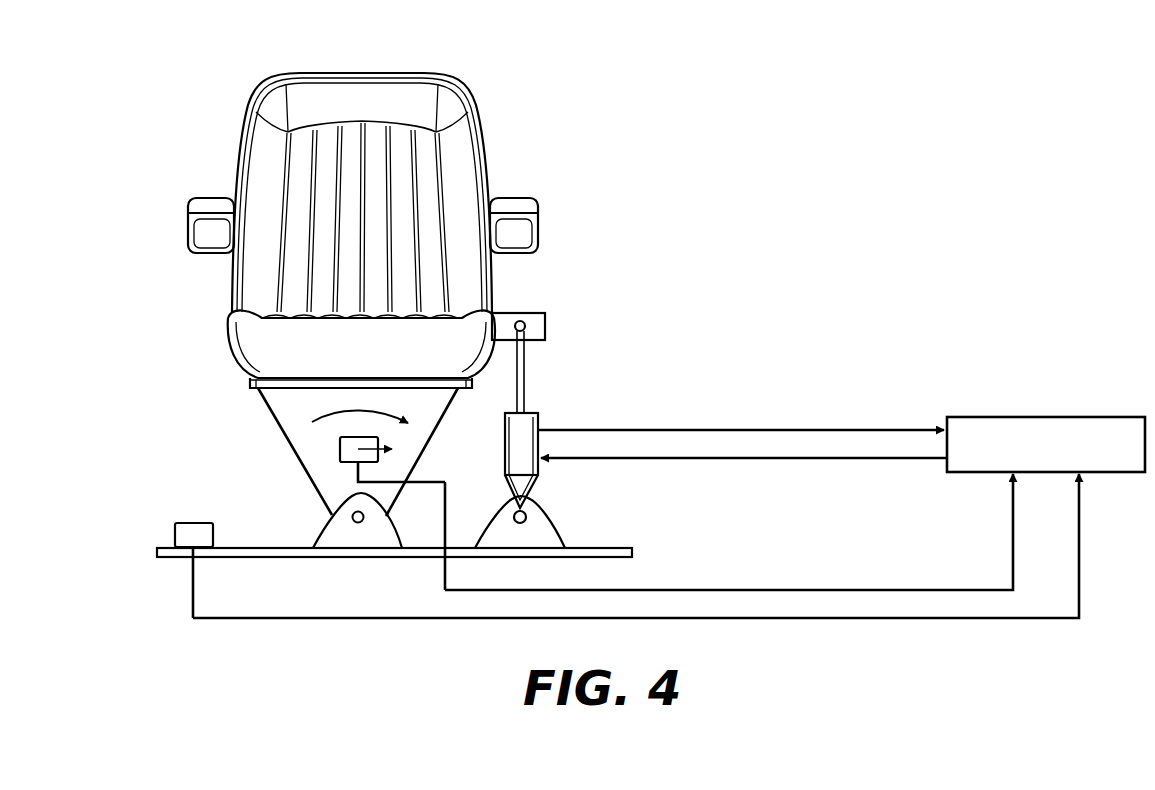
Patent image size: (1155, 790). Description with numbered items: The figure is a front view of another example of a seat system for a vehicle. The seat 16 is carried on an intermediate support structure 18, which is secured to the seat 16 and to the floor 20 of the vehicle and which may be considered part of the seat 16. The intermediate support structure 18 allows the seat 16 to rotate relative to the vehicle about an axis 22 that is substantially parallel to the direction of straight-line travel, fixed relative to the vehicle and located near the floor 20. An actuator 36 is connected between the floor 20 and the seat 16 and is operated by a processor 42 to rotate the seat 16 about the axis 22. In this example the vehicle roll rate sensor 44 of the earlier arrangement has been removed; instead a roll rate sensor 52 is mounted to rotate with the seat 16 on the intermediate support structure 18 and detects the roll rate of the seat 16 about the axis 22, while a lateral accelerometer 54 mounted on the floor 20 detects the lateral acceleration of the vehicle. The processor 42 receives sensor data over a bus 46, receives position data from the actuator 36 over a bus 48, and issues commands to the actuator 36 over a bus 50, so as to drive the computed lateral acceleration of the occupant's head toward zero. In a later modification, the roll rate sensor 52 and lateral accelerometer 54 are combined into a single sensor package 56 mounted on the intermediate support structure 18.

The seat 16 is at (228, 297).
The intermediate support structure 18 is at (280, 402).
The floor 20 is at (598, 547).
The axis 22 is at (357, 510).
The actuator 36 is at (532, 413).
The processor 42 is at (1038, 417).
The sensor 44 is at (427, 533).
The bus 46 is at (725, 588).
The bus 48 is at (725, 430).
The bus 50 is at (725, 458).
The roll rate sensor 52 is at (338, 443).
The lateral accelerometer 54 is at (197, 523).
The sensor package 56 is at (725, 620).